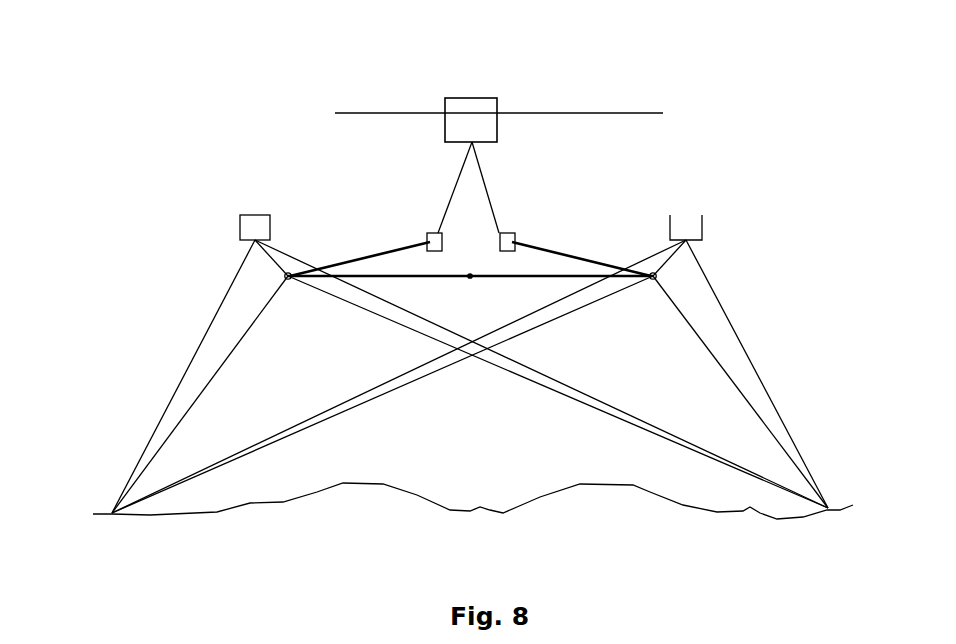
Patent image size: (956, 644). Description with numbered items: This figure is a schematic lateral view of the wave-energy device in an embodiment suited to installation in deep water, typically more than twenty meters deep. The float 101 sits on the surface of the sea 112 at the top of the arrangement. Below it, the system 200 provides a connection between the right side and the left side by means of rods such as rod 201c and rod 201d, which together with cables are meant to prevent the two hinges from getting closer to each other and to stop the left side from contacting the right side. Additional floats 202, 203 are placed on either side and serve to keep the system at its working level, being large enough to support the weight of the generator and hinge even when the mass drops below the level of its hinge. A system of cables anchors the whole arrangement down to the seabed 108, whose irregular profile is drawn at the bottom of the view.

The float 101 is at (497, 98).
The sea surface 112 is at (635, 110).
The system 200 is at (133, 265).
The rod 201c is at (378, 273).
The rod 201d is at (563, 273).
The additional float 202 is at (242, 220).
The additional float 203 is at (703, 225).
The seabed 108 is at (167, 512).